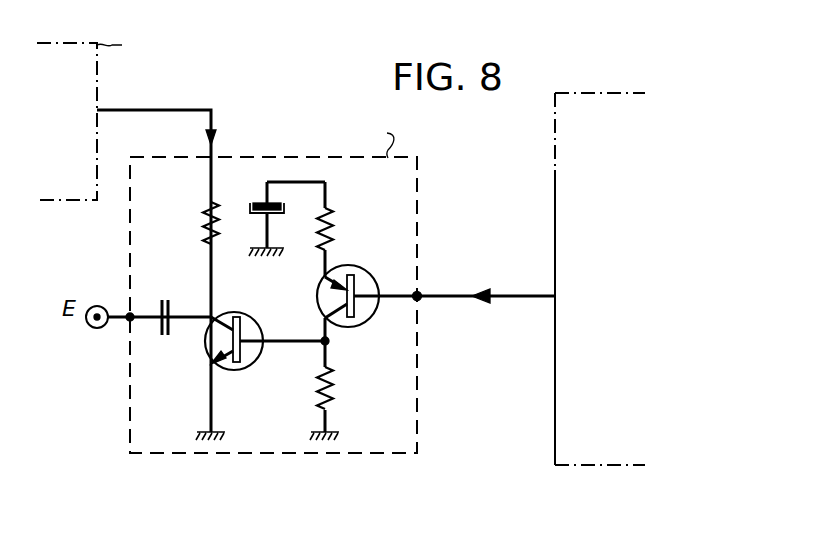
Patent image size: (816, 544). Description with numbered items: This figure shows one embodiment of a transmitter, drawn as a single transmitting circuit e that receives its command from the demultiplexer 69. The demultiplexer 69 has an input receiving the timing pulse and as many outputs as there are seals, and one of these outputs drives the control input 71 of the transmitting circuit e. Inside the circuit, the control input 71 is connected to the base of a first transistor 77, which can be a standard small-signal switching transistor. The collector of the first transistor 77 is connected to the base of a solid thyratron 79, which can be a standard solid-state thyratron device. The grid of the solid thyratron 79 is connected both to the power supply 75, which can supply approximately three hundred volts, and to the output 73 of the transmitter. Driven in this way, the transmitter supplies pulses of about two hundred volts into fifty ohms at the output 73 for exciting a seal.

The power supply 75 is at (97, 68).
The output 73 is at (133, 314).
The solid thyratron 79 is at (259, 357).
The first transistor 77 is at (360, 266).
The control input 71 is at (417, 296).
The demultiplexer 69 is at (555, 188).
The transmitting circuit e is at (304, 157).